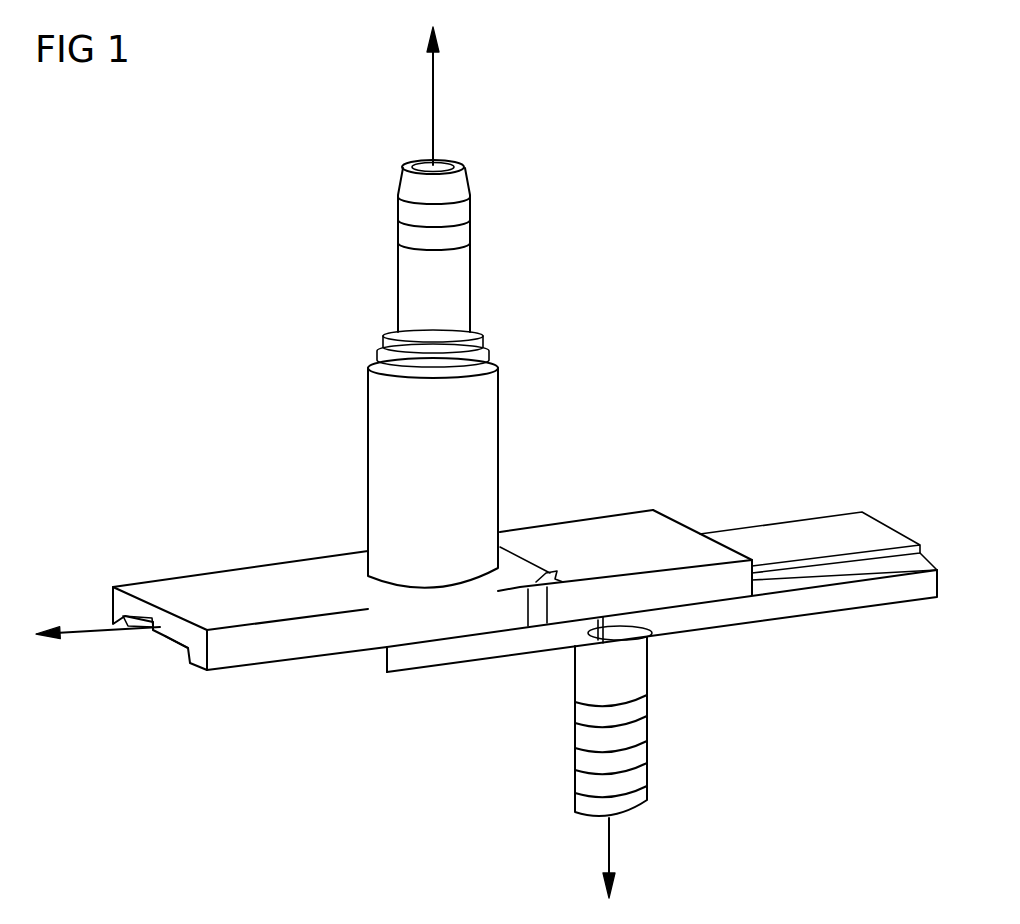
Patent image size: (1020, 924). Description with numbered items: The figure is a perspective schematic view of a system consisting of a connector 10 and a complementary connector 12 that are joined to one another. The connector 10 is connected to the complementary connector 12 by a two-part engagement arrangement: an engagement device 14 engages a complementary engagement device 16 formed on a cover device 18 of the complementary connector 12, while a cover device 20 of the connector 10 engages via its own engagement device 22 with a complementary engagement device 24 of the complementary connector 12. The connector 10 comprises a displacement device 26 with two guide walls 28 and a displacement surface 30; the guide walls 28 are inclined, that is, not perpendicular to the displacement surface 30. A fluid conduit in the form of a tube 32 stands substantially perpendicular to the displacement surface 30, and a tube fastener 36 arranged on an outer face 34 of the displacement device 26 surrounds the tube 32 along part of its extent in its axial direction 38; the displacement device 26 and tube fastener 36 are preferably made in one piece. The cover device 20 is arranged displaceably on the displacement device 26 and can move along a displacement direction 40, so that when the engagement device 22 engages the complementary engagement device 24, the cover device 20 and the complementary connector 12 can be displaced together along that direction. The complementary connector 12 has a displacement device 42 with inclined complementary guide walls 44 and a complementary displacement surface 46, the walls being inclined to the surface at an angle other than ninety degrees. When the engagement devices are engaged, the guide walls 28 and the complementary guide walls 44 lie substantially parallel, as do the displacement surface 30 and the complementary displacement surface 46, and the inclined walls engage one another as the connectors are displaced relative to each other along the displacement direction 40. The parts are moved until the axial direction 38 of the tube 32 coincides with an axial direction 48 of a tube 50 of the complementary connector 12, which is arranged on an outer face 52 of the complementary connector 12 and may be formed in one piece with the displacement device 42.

The connector 10 is at (305, 348).
The complementary connector 12 is at (763, 727).
The engagement device 14 is at (553, 572).
The complementary engagement device 16 is at (547, 622).
The cover device 18 is at (607, 533).
The cover device 20 is at (349, 653).
The engagement device 22 is at (602, 642).
The complementary engagement device 24 is at (650, 636).
The displacement device 26 is at (185, 572).
The guide walls 28 is at (137, 637).
The displacement surface 30 is at (152, 658).
The tube 32 is at (415, 270).
The outer face 34 is at (263, 578).
The tube fastener 36 is at (485, 416).
The axial direction 38 is at (436, 97).
The displacement direction 40 is at (80, 627).
The displacement device 42 is at (893, 593).
The complementary guide walls 44 is at (853, 573).
The complementary displacement surface 46 is at (874, 510).
The axial direction 48 is at (607, 850).
The tube 50 is at (637, 690).
The outer face 52 is at (797, 637).